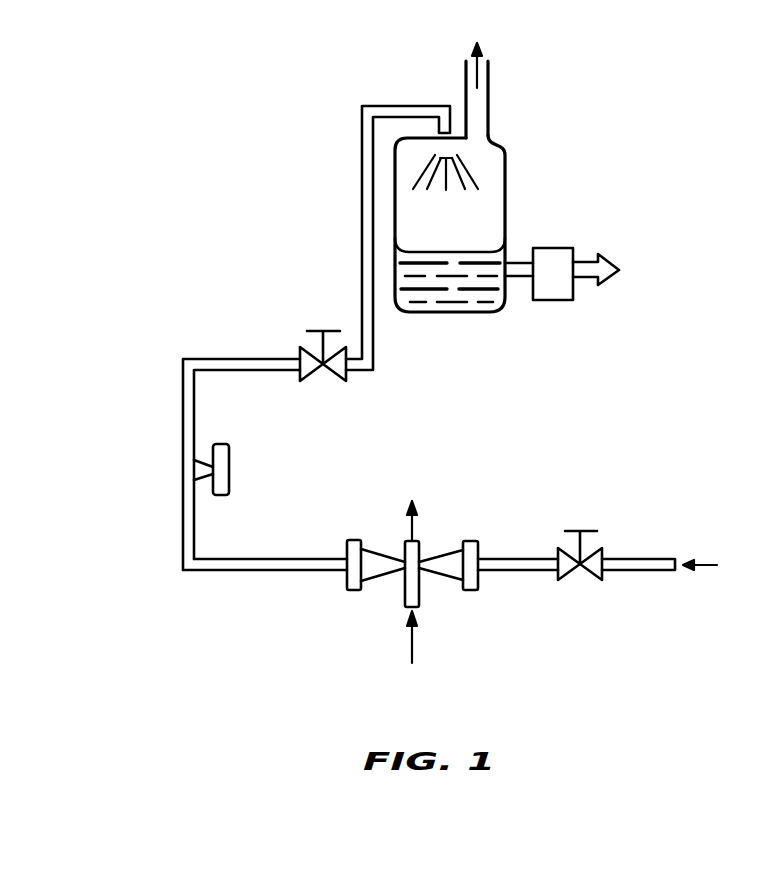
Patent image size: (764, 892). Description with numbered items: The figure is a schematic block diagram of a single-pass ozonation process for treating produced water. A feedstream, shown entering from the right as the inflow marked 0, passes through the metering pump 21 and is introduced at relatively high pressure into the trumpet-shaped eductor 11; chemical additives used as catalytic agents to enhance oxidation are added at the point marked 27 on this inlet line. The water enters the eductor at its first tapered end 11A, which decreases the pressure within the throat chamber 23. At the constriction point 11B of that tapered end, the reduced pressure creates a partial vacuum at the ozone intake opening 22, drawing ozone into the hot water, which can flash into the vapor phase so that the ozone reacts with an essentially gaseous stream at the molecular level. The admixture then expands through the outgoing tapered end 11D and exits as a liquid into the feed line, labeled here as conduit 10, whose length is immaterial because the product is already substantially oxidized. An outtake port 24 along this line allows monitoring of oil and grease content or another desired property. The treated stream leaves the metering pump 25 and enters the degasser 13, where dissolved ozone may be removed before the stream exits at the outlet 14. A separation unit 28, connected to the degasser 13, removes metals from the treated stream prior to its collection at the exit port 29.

The feed stream 0 is at (714, 565).
The conduit 10 is at (235, 572).
The eductor 11 is at (415, 507).
The first tapered end 11A is at (478, 588).
The constriction point 11B is at (422, 570).
The outgoing tapered end 11D is at (346, 586).
The degasser 13 is at (505, 187).
The outlet 14 is at (488, 75).
The metering pump 21 is at (591, 531).
The ozone intake opening 22 is at (414, 655).
The throat chamber 23 is at (402, 592).
The outtake port 24 is at (183, 448).
The metering pump 25 is at (316, 330).
The chemical addition point 27 is at (632, 571).
The separation unit 28 is at (555, 262).
The exit port 29 is at (619, 257).